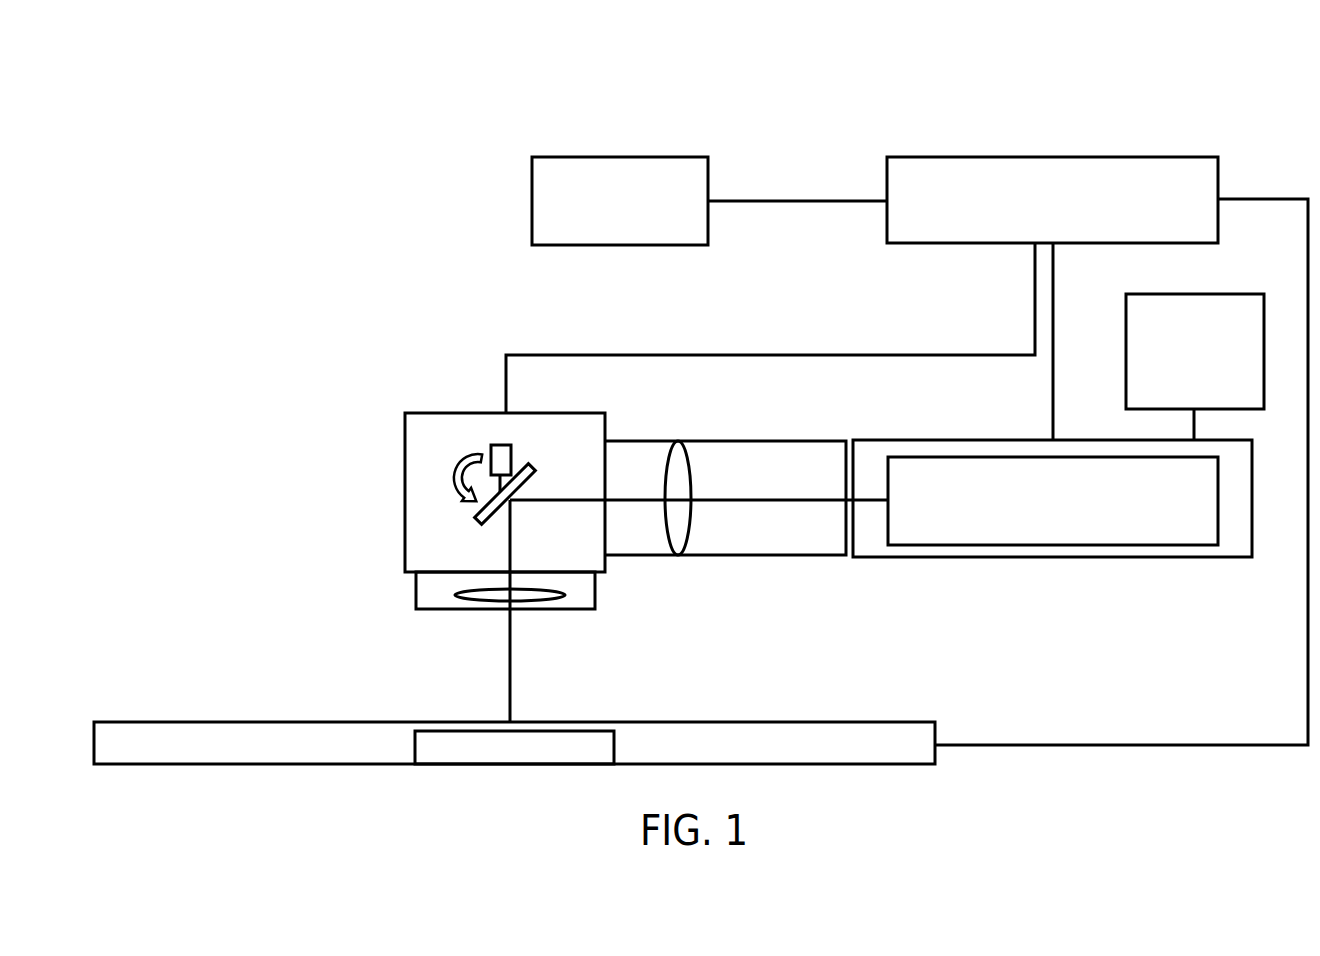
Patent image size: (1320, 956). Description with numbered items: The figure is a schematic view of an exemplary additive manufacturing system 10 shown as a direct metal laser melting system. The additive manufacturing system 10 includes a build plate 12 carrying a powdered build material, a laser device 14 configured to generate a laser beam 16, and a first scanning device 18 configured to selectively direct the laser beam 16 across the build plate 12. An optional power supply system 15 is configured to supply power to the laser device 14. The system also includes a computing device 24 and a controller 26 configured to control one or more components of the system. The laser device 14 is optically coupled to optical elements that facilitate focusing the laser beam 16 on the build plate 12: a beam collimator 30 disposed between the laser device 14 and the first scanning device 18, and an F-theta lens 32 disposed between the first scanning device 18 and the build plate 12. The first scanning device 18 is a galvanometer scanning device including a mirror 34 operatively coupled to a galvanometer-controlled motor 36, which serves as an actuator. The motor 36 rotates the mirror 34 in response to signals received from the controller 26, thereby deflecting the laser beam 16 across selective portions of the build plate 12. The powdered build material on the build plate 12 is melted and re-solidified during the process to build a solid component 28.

The additive manufacturing system 10 is at (1117, 72).
The build plate 12 is at (732, 722).
The laser device 14 is at (1038, 510).
The power supply system 15 is at (1178, 361).
The laser beam 16 is at (778, 500).
The first scanning device 18 is at (434, 413).
The computing device 24 is at (599, 211).
The controller 26 is at (1044, 207).
The solid component 28 is at (589, 731).
The beam collimator 30 is at (688, 535).
The F-theta lens 32 is at (482, 603).
The mirror 34 is at (536, 468).
The galvanometer-controlled motor 36 is at (500, 443).